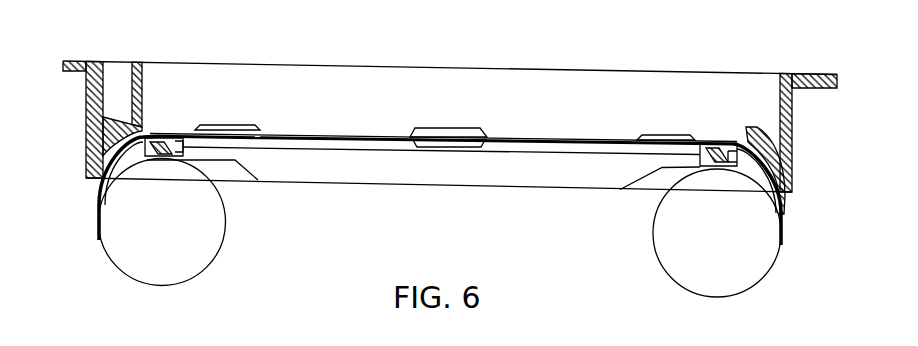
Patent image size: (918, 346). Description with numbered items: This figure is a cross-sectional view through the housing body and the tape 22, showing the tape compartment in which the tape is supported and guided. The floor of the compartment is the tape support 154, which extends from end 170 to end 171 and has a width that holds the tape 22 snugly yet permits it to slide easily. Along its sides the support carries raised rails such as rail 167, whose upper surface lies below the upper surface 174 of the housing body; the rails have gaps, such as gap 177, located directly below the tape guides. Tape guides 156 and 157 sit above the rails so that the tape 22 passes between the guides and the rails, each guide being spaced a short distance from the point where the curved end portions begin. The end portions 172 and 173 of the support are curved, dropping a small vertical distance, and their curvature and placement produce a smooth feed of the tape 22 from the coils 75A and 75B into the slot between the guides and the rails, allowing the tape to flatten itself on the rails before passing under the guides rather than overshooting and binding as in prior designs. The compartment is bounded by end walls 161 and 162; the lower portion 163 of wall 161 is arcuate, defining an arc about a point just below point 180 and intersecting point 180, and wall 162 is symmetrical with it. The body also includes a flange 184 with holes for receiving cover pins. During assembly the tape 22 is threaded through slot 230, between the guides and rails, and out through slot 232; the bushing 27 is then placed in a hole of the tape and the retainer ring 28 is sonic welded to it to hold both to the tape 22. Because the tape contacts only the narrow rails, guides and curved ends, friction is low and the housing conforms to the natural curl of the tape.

The tape 22 is at (498, 139).
The bushing 27 is at (444, 129).
The retainer ring 28 is at (466, 148).
The coil 75A is at (655, 256).
The coil 75B is at (223, 249).
The tape support 154 is at (359, 148).
The tape guide 156 is at (229, 124).
The tape guide 157 is at (661, 134).
The end wall 161 is at (150, 83).
The end wall 162 is at (752, 127).
The lower portion of wall 163 is at (102, 130).
The raised rail 167 is at (334, 133).
The end of support 170 is at (126, 178).
The end of support 171 is at (745, 166).
The curved end portion 172 is at (713, 165).
The curved end portion 173 is at (168, 159).
The upper surface of body 174 is at (781, 73).
The gap in rail 177 is at (248, 142).
The point of wall 180 is at (97, 179).
The flange 184 is at (818, 79).
The slot 230 is at (784, 199).
The slot 232 is at (96, 186).